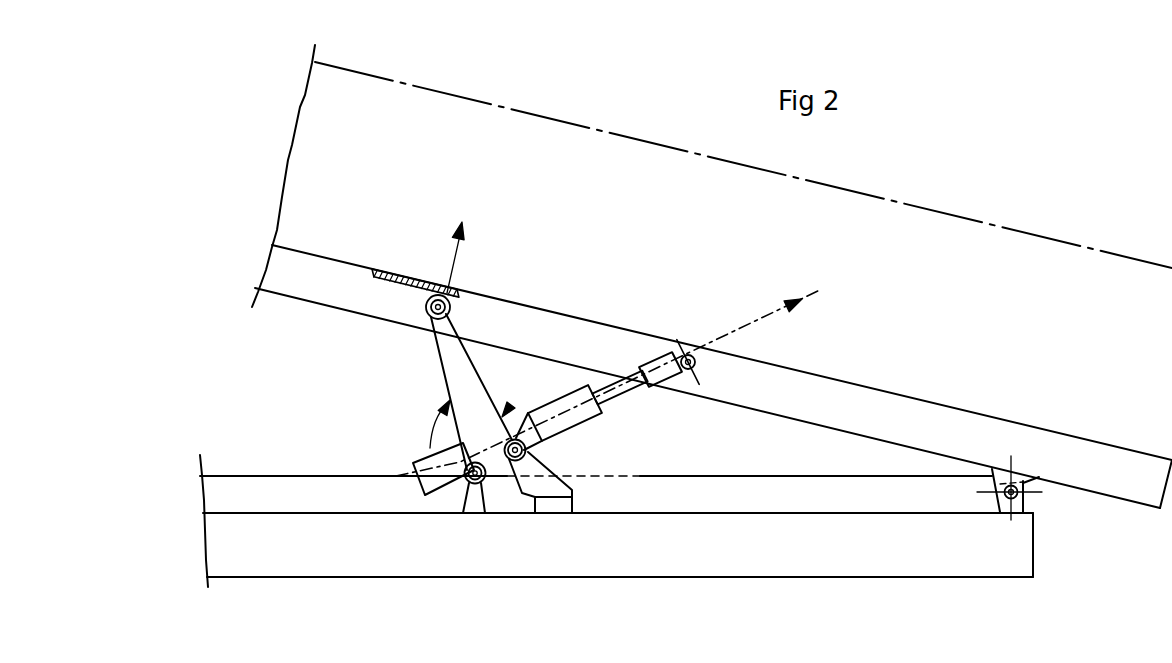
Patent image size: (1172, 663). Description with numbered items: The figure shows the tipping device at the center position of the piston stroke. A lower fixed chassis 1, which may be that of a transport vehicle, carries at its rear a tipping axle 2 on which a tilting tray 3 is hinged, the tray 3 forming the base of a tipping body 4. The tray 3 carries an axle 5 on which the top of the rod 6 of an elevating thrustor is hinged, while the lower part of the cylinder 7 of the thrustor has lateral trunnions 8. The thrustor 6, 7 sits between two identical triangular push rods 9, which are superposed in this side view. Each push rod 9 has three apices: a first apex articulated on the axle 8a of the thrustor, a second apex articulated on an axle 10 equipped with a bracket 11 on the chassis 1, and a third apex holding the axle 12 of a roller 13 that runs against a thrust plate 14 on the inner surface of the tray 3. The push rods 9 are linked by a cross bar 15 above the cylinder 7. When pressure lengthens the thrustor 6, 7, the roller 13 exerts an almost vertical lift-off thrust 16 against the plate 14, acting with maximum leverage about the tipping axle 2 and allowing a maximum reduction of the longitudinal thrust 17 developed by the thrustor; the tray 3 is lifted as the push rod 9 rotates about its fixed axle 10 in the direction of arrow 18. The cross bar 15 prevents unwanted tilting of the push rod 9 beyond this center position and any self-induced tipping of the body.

The lower fixed chassis 1 is at (731, 562).
The tipping axle 2 is at (1020, 496).
The tilting tray 3 is at (798, 405).
The tipping body 4 is at (919, 318).
The axle 5 is at (695, 352).
The rod 6 is at (644, 392).
The cylinder 7 is at (571, 420).
The lateral trunnions 8 is at (483, 489).
The axle of the thrustor 8a is at (467, 499).
The triangular push rod 9 is at (460, 378).
The axle 10 is at (524, 431).
The bracket 11 is at (538, 465).
The axle of the roller 12 is at (449, 309).
The roller 13 is at (429, 316).
The thrust plate 14 is at (400, 278).
The cross bar 15 is at (511, 405).
The lift-off thrust 16 is at (457, 250).
The longitudinal thrust 17 is at (752, 326).
The arrow 18 is at (434, 428).